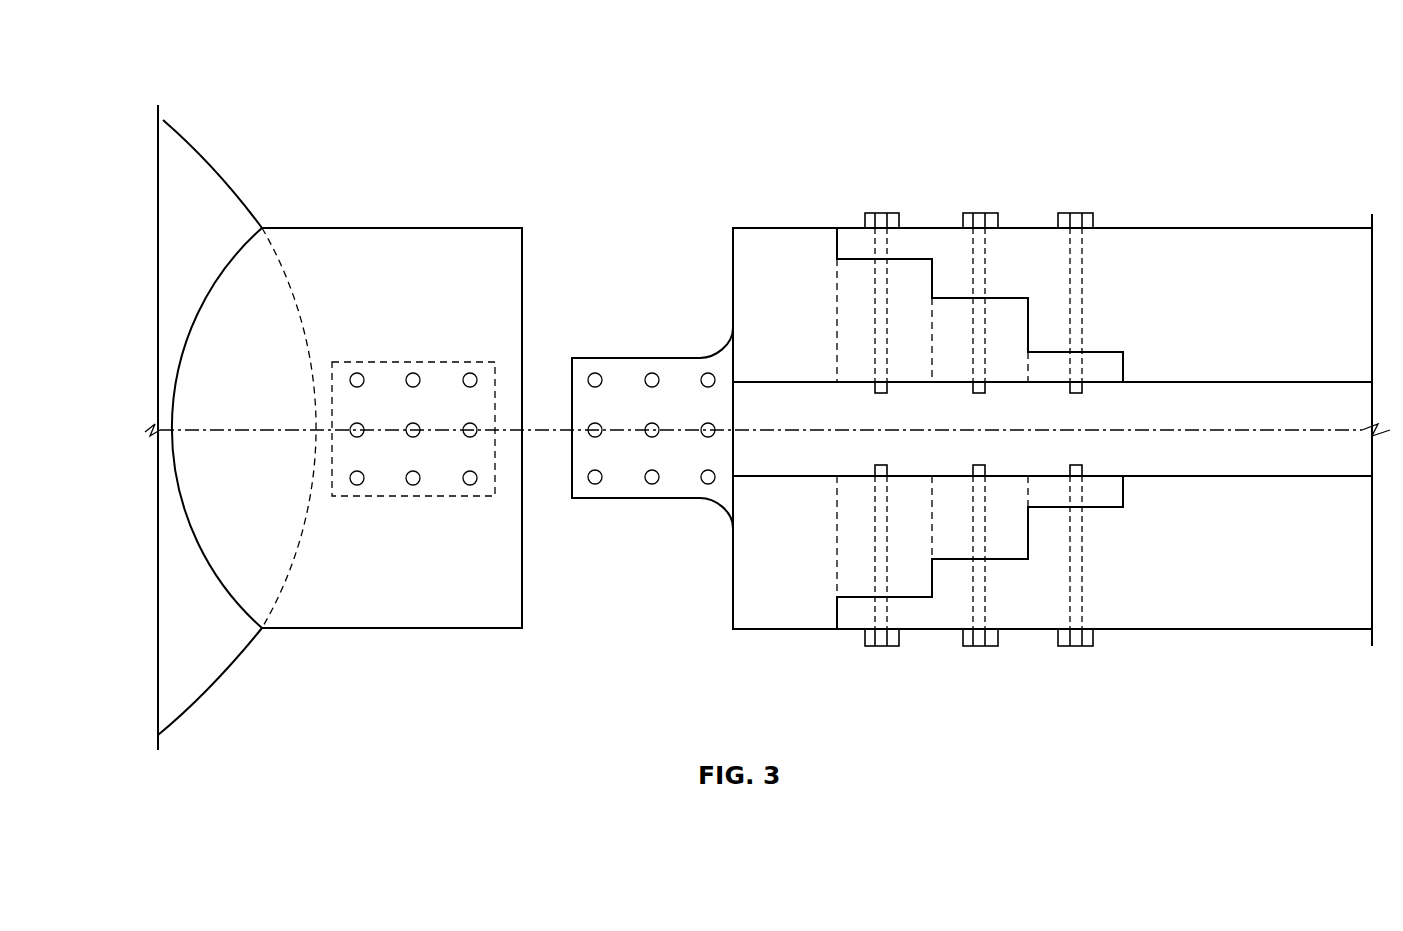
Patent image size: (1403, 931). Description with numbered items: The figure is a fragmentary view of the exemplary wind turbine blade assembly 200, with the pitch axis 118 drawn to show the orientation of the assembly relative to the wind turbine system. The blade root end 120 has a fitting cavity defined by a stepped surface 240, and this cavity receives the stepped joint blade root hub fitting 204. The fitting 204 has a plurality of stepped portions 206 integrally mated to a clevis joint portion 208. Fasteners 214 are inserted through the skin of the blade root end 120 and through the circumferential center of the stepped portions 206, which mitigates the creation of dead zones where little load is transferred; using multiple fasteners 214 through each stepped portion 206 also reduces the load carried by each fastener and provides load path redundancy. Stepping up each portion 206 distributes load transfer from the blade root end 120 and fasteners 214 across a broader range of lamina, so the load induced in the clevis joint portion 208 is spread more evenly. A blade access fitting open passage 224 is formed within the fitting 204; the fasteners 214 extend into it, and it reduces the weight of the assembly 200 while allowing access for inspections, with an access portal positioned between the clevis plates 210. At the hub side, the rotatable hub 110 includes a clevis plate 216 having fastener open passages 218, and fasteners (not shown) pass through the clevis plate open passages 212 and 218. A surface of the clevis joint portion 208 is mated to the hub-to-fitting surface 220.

The wind turbine blade assembly 200 is at (215, 58).
The rotatable hub 110 is at (217, 229).
The hub-to-fitting surface 220 is at (450, 228).
The fastener open passages 218 is at (355, 377).
The clevis plate 216 is at (415, 373).
The pitch axis 118 is at (228, 428).
The clevis plates 210 is at (646, 358).
The clevis plate open passages 212 is at (594, 483).
The stepped joint blade root hub fitting 204 is at (750, 150).
The clevis joint portion 208 is at (802, 287).
The blade root end 120 is at (1263, 293).
The blade access fitting open passage 224 is at (855, 461).
The stepped surface 240 is at (930, 278).
The fasteners 214 is at (877, 213).
The stepped portions 206 is at (918, 347).